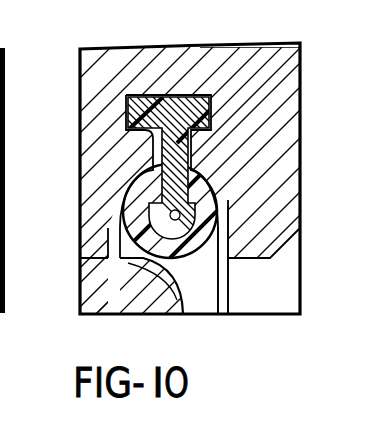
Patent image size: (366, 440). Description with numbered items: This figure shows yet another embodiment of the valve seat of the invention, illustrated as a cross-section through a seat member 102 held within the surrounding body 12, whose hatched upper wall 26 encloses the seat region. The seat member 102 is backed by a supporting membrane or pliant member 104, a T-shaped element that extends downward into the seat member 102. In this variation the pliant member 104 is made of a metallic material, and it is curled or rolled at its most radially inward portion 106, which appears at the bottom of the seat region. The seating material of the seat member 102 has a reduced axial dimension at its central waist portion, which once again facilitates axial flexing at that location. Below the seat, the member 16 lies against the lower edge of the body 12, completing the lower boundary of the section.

The housing body 12 is at (97, 67).
The housing wall 26 is at (250, 56).
The supporting membrane or pliant member 104 is at (158, 153).
The seat member 102 is at (110, 210).
The lever arm 16 is at (83, 275).
The most radially inward portion 106 is at (186, 260).